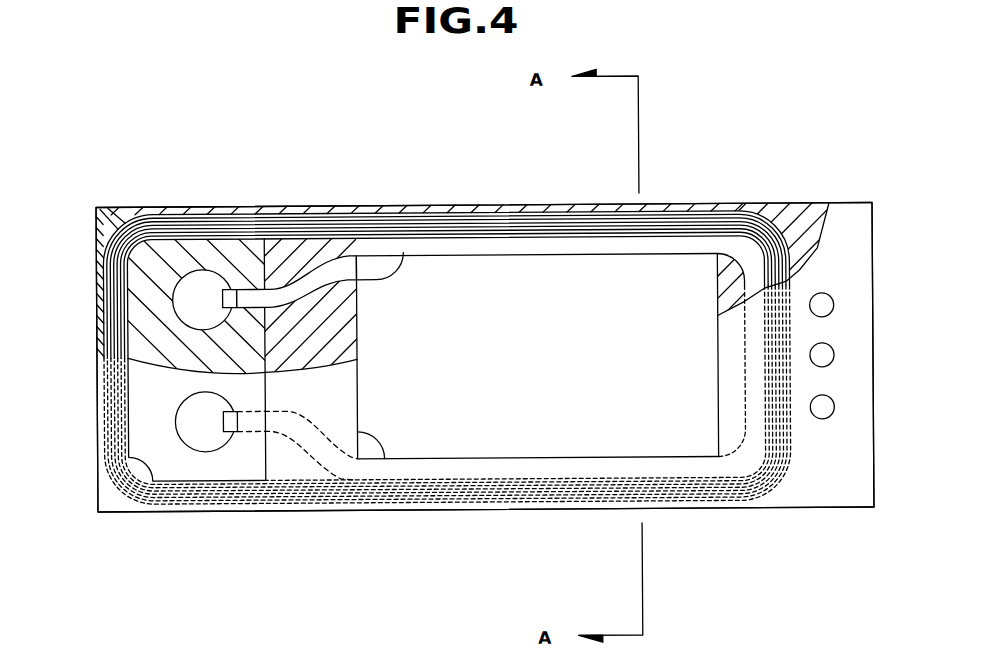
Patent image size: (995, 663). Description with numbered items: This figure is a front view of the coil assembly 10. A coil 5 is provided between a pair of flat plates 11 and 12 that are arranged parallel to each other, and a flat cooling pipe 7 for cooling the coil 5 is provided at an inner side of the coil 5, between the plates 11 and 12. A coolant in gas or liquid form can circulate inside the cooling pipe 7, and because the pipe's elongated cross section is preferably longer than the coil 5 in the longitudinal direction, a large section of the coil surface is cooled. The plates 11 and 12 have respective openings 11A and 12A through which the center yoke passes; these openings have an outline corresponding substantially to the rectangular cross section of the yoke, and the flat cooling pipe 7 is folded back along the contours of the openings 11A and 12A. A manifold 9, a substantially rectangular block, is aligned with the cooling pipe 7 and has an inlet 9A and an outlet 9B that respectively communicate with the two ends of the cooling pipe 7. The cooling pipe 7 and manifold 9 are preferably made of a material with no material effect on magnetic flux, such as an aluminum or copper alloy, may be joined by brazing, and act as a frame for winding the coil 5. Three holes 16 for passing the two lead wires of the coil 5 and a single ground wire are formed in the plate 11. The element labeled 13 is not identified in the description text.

The coil assembly 10 is at (760, 128).
The plate 11 is at (833, 504).
The opening 11A is at (384, 458).
The plate 12 is at (97, 223).
The opening 12A is at (404, 252).
The sealing member 13 is at (106, 206).
The coil 5 is at (170, 206).
The flat cooling pipe 7 is at (517, 243).
The manifold 9 is at (212, 234).
The inlet 9A is at (175, 303).
The outlet 9B is at (176, 429).
The holes 16 is at (834, 307).